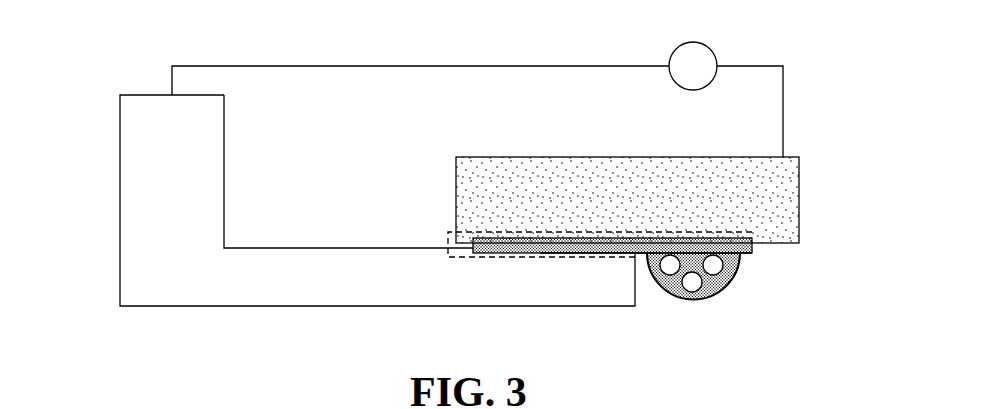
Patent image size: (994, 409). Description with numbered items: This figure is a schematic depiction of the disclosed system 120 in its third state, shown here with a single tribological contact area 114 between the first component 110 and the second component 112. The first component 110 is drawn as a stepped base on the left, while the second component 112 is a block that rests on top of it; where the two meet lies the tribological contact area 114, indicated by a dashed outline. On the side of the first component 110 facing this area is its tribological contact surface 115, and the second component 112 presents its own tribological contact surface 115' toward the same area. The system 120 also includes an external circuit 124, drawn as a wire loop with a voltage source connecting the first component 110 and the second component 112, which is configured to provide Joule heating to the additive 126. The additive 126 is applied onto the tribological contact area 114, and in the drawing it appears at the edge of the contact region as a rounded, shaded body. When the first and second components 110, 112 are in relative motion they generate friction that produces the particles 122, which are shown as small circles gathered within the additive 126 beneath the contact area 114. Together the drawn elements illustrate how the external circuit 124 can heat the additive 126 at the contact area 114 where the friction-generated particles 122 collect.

The first component 110 is at (136, 95).
The system 120 is at (156, 44).
The external circuit 124 is at (784, 118).
The second component 112 is at (795, 200).
The tribological contact area 114 is at (440, 250).
The first contact surface 115 is at (595, 296).
The first contact surface of second component 115' is at (646, 303).
The particles 122 is at (710, 287).
The additive 126 is at (743, 255).